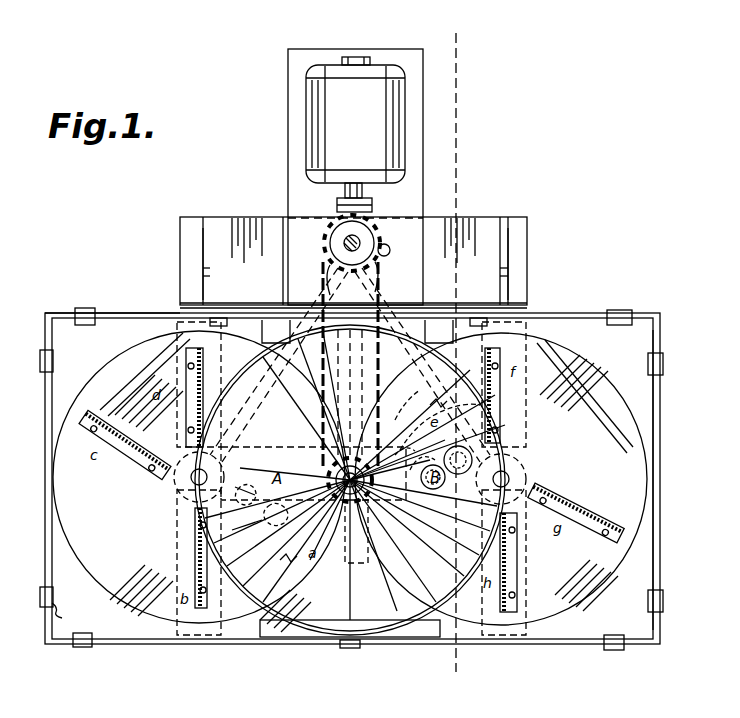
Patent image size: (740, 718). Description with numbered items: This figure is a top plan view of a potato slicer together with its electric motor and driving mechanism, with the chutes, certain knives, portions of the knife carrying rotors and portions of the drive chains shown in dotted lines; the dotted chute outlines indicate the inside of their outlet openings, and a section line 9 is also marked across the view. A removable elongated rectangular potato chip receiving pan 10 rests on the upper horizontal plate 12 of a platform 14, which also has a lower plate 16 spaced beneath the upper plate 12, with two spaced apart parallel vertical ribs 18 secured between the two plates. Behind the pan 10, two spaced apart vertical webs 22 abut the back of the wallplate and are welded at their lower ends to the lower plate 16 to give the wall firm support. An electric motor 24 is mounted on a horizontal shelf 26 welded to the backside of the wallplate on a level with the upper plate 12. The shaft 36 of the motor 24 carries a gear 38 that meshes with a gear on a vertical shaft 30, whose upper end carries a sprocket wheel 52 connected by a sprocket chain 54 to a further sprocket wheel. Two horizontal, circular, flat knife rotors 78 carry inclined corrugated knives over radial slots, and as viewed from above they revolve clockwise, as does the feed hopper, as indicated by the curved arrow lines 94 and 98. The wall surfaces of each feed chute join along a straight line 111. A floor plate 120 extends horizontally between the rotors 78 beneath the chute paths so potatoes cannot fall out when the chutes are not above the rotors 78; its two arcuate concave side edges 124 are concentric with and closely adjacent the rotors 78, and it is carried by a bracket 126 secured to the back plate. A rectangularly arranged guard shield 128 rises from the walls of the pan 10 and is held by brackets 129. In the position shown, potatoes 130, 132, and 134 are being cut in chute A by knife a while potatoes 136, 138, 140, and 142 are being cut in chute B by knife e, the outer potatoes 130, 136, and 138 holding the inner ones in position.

The section line 9- 9 is at (435, 32).
The potato chip receiving pan 10 is at (45, 617).
The upper horizontal plate 12 is at (180, 312).
The platform 14 is at (538, 272).
The lower plate 16 is at (232, 222).
The vertical ribs 18 is at (212, 640).
The vertical webs 22 is at (203, 245).
The electric motor 24 is at (405, 117).
The horizontal shelf 26 is at (417, 152).
The vertical shaft 30 is at (348, 240).
The motor shaft 36 is at (345, 192).
The gear 38 is at (372, 212).
The sprocket wheel 52 is at (388, 251).
The sprocket chain 54 is at (383, 270).
The knife rotors 78 is at (114, 361).
The curved arrow line 94 is at (140, 552).
The curved arrow line 98 is at (370, 590).
The straight line 111 is at (362, 485).
The floor plate 120 is at (282, 309).
The arcuate concave side edges 124 is at (283, 613).
The bracket 126 is at (335, 560).
The guard shield 128 is at (661, 458).
The brackets 129 is at (69, 614).
The potato 130 is at (258, 525).
The potato 132 is at (264, 547).
The potato 134 is at (276, 565).
The potato 136 is at (426, 482).
The potato 138 is at (458, 475).
The potato 140 is at (455, 414).
The potato 142 is at (418, 392).